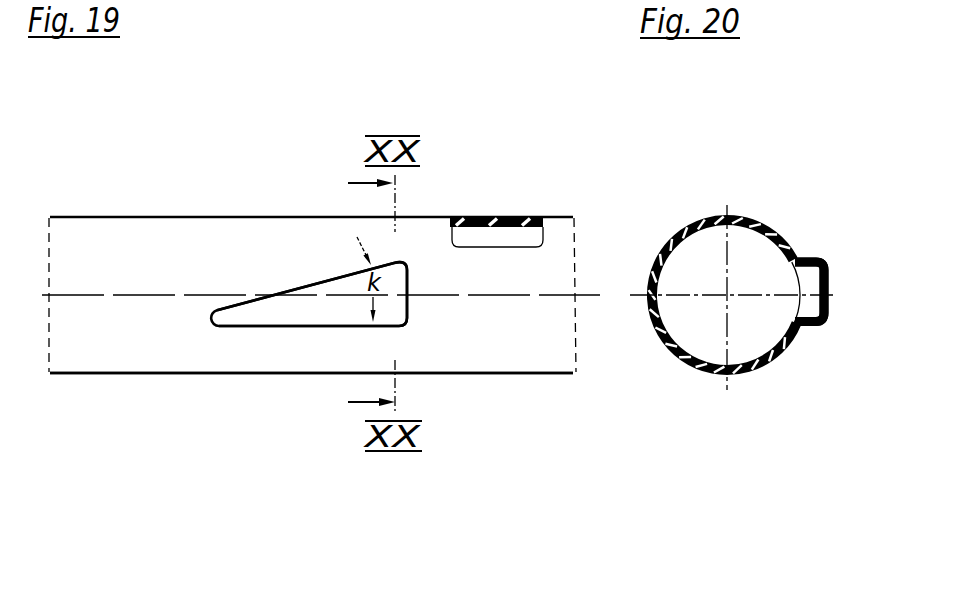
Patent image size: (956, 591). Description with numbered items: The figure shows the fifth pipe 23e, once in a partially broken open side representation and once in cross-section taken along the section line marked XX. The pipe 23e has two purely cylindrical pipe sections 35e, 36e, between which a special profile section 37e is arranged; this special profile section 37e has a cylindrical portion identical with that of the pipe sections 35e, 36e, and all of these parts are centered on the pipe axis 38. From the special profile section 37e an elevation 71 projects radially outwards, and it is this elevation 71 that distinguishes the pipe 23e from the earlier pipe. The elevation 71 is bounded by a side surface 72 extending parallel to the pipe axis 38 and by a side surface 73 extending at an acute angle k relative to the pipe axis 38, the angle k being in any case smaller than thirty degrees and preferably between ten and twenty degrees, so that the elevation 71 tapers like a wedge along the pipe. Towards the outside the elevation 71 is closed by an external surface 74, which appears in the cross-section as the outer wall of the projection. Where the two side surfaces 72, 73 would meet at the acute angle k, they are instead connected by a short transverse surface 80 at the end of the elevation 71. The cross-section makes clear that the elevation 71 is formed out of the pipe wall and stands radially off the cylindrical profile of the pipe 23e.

In FIG. 19, the pipe 23e is at (559, 196).
In FIG. 20, the pipe 23e is at (677, 207).
In FIG. 19, the cylindrical pipe section 35e is at (122, 392).
In FIG. 19, the cylindrical pipe section 36e is at (506, 397).
In FIG. 19, the special profile section 37e is at (323, 432).
In FIG. 19, the pipe axis 38 is at (577, 294).
In FIG. 20, the pipe axis 38 is at (725, 297).
In FIG. 19, the elevation 71 is at (275, 277).
In FIG. 20, the elevation 71 is at (832, 240).
In FIG. 19, the side surface 72 is at (302, 328).
In FIG. 20, the side surface 72 is at (807, 327).
In FIG. 19, the side surface 73 is at (318, 285).
In FIG. 20, the side surface 73 is at (810, 257).
In FIG. 20, the external surface 74 is at (828, 306).
In FIG. 19, the transverse surface 80 is at (410, 282).